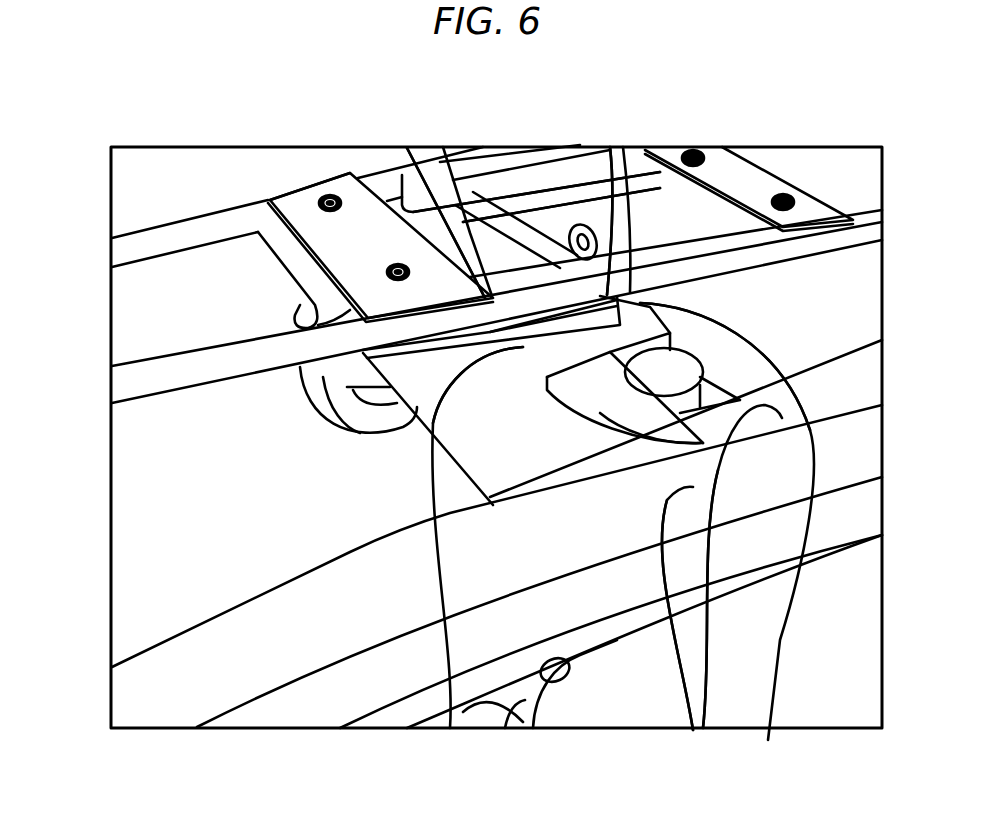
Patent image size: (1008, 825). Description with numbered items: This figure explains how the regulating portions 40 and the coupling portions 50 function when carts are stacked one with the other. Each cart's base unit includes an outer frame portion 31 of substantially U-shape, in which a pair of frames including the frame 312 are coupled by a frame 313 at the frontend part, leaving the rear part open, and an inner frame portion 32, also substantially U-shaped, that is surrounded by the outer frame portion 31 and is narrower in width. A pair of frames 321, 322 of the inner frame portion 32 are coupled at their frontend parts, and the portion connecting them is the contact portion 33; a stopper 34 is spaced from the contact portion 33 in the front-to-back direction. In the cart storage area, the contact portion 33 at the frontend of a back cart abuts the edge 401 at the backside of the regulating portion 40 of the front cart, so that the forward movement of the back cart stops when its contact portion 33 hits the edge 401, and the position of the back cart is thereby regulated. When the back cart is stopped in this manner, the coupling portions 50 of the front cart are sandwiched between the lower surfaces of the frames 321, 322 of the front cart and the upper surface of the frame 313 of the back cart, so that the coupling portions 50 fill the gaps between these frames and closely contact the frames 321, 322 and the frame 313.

The outer frame portion 31 is at (693, 730).
The frame 312 is at (703, 728).
The frame 313 is at (450, 728).
The inner frame portion 32 is at (607, 148).
The frame 321 is at (511, 192).
The frame 322 is at (613, 148).
The contact portion 33 is at (430, 227).
The stopper 34 is at (280, 237).
The regulating portion 40 is at (357, 223).
The edge 401 is at (423, 247).
The coupling portion 50 is at (768, 740).